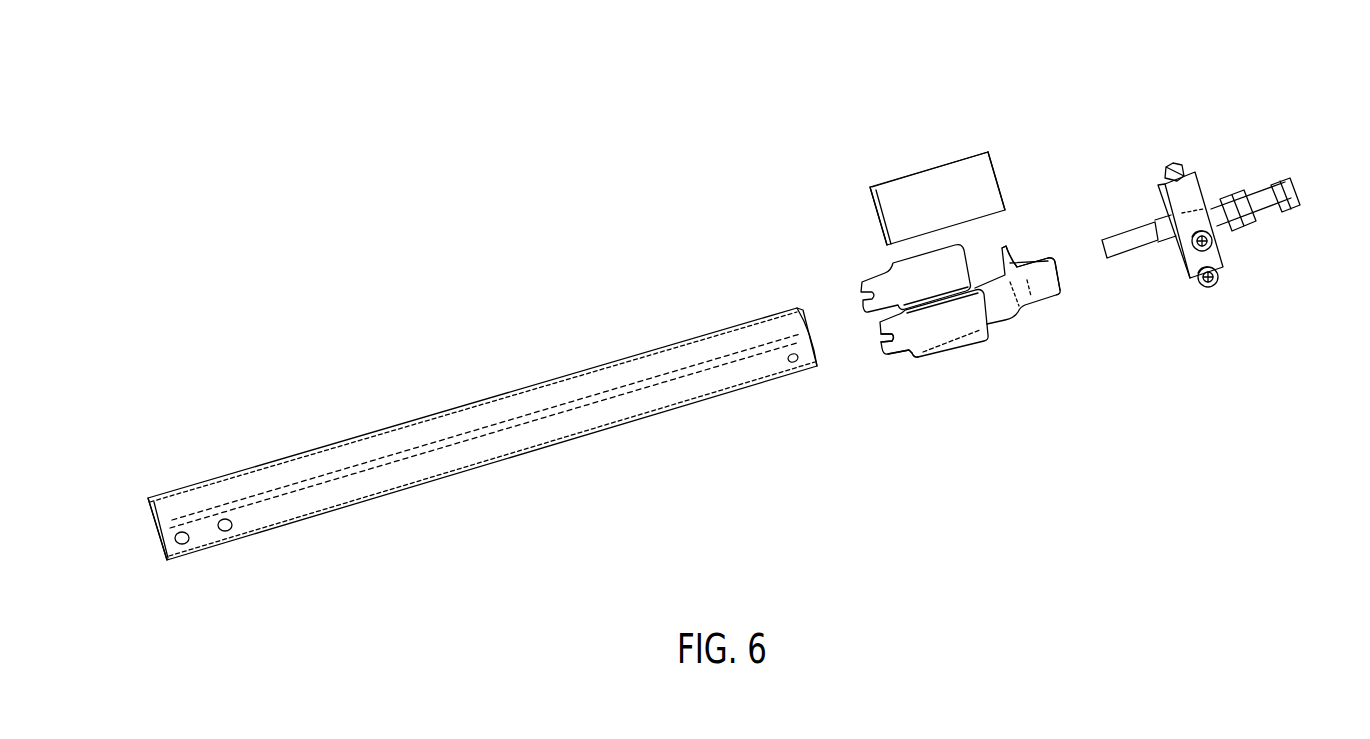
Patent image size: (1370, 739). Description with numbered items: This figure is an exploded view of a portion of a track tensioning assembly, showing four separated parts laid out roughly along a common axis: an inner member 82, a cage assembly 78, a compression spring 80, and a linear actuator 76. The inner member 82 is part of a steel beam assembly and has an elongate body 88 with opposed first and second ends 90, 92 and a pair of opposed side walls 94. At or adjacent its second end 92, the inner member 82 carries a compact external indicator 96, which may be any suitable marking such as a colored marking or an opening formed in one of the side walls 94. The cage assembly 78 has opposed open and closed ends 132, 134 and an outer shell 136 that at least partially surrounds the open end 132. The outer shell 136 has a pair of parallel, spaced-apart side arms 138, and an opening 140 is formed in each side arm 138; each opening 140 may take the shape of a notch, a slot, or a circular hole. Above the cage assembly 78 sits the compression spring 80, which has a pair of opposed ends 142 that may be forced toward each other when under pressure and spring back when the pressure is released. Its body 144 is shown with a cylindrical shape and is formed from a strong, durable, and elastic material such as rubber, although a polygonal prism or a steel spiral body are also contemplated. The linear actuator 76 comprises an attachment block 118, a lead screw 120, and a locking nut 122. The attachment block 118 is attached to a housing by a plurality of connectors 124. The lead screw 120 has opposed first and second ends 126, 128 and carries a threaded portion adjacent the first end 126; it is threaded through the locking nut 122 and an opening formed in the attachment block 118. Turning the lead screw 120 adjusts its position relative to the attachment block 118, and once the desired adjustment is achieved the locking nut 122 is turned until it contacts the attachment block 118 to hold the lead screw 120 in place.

The linear actuator 76 is at (1232, 145).
The cage assembly 78 is at (995, 358).
The compression spring 80 is at (967, 125).
The inner member 82 is at (324, 437).
The elongate body 88 is at (473, 398).
The first end 90 is at (155, 530).
The second end 92 is at (804, 317).
The side walls 94 is at (457, 465).
The indicator 96 is at (791, 363).
The attachment block 118 is at (1180, 197).
The lead screw 120 is at (1255, 190).
The locking nut 122 is at (1247, 217).
The connectors 124 is at (1214, 284).
The first end 126 is at (1107, 262).
The second end 128 is at (1293, 183).
The open end 132 is at (860, 292).
The closed end 134 is at (1013, 254).
The outer shell 136 is at (943, 323).
The side arms 138 is at (903, 355).
The opening 140 is at (881, 342).
The ends 142 is at (997, 168).
The body 144 is at (908, 172).